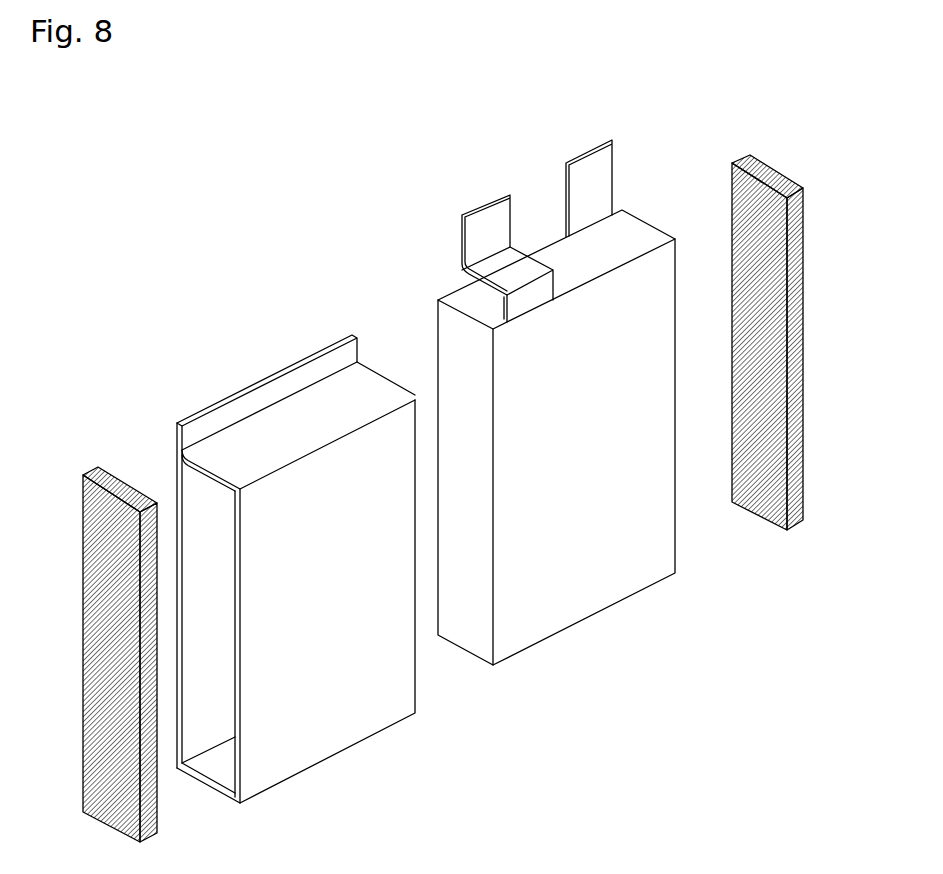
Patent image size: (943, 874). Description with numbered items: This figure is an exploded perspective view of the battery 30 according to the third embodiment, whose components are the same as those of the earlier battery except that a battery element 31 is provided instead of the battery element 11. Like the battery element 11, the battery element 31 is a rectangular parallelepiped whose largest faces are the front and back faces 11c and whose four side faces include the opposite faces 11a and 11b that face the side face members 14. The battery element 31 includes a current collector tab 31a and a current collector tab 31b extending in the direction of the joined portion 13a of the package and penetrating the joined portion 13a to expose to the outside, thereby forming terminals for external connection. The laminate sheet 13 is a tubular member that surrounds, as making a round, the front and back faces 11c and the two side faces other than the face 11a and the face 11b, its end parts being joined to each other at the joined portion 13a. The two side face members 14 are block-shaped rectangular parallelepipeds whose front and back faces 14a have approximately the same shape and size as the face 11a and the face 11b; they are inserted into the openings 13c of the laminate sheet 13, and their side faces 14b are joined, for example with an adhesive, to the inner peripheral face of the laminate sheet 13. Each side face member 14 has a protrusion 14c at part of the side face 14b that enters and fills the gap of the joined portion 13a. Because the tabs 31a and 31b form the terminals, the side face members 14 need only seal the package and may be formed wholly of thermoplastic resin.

The battery 30 is at (175, 157).
The battery element 11 is at (538, 405).
The face 11a is at (465, 340).
The face 11b is at (659, 220).
The front and back faces 11c is at (592, 588).
The laminate sheet 13 is at (242, 346).
The joined portion 13a is at (222, 408).
The openings 13c is at (188, 500).
The side face members 14 is at (72, 457).
The front and back faces 14a is at (102, 822).
The side faces 14b is at (150, 813).
The protrusion 14c is at (93, 470).
The battery element 31 is at (472, 202).
The current collector tab 31a is at (488, 203).
The current collector tab 31b is at (583, 153).